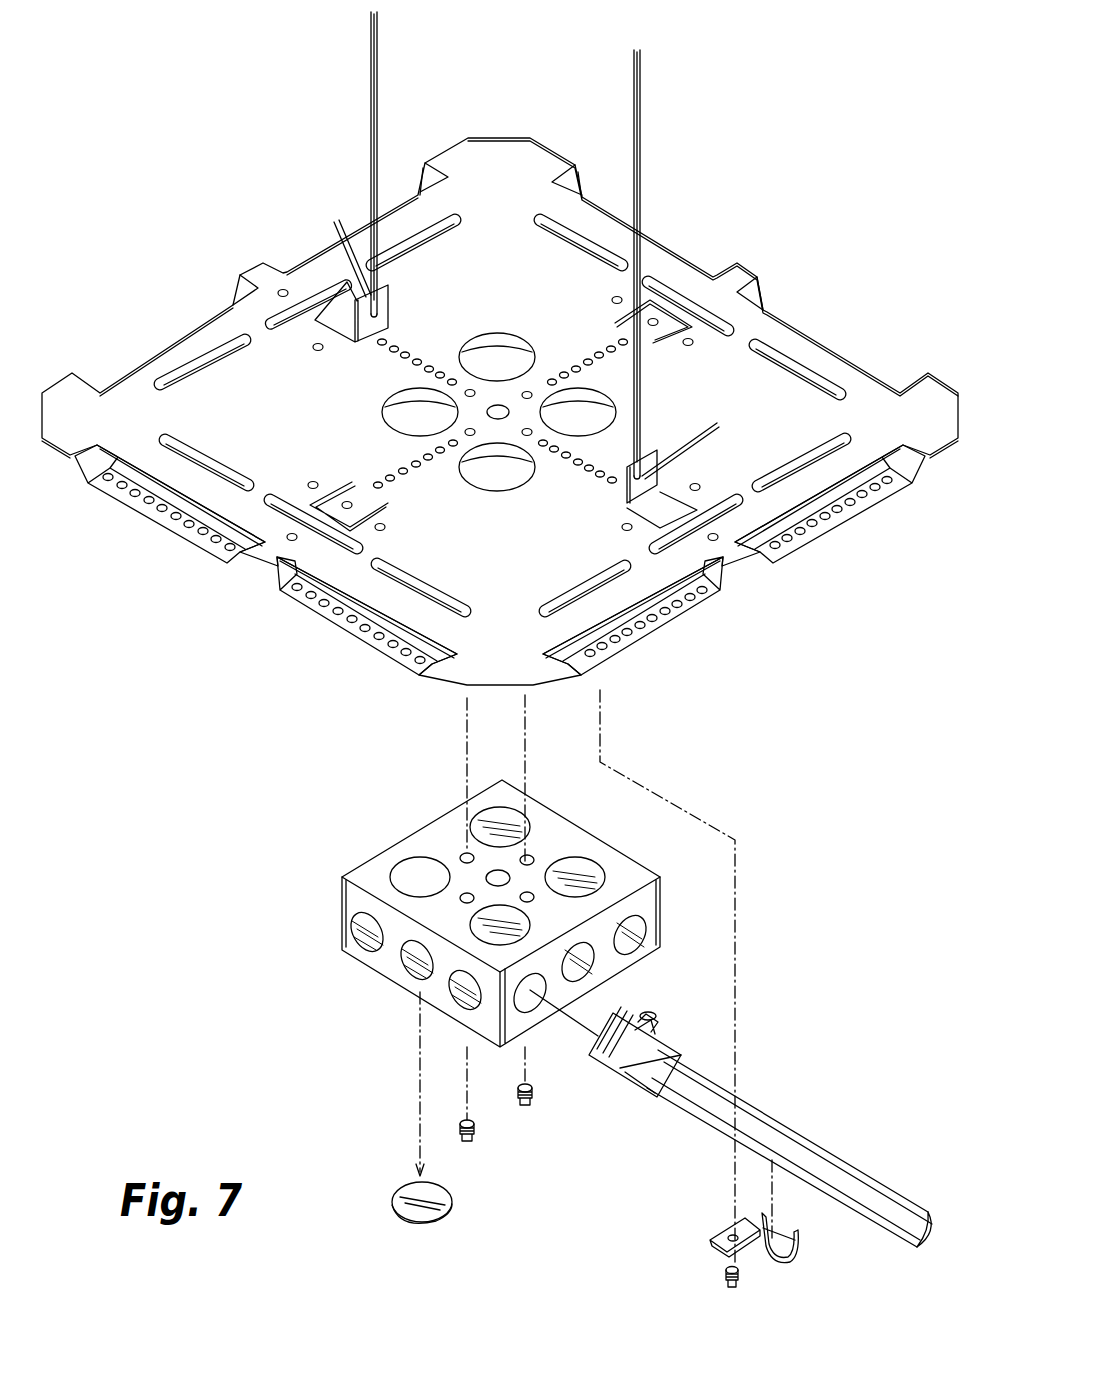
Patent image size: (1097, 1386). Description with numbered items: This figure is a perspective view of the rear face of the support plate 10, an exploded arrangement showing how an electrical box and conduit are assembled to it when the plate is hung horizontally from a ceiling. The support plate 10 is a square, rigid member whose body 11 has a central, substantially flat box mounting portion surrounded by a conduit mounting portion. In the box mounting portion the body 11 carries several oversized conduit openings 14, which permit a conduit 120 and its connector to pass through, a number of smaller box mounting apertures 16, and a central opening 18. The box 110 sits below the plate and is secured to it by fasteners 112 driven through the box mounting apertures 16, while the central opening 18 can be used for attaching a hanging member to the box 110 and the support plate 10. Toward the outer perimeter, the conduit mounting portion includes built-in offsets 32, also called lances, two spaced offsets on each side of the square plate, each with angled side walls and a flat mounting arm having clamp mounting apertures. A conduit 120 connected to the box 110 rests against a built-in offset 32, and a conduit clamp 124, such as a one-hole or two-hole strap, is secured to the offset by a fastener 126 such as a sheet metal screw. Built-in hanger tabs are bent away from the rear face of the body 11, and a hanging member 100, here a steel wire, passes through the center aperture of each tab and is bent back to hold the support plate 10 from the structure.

The support plate 10 is at (199, 178).
The body 11 is at (500, 136).
The conduit openings 14 is at (486, 365).
The box mounting apertures 16 is at (412, 368).
The central opening 18 is at (500, 406).
The built-in offsets 32 is at (303, 245).
The hanging member 100 is at (369, 88).
The box 110 is at (395, 830).
The fasteners 112 is at (475, 1142).
The conduit 120 is at (862, 1188).
The conduit clamps 124 is at (790, 1252).
The fastener 126 is at (722, 1275).